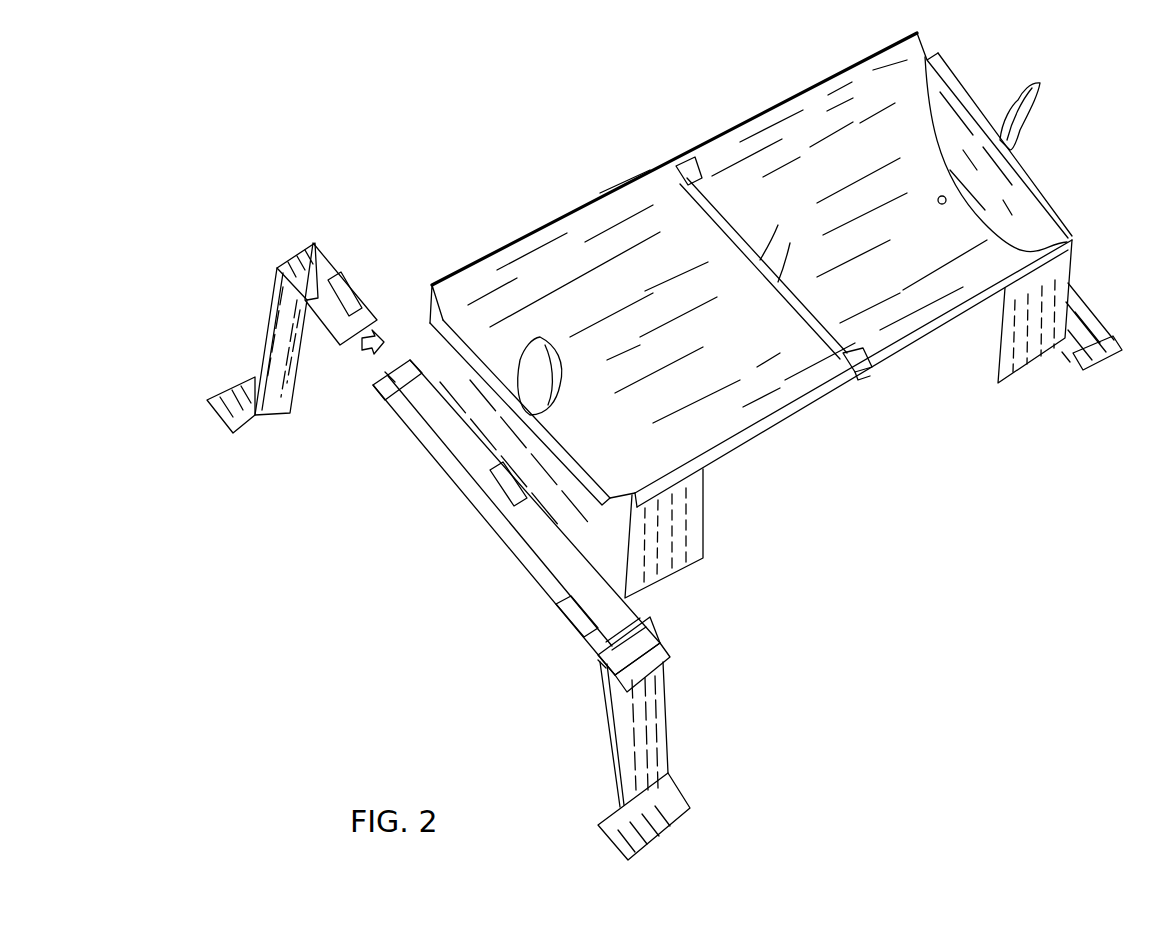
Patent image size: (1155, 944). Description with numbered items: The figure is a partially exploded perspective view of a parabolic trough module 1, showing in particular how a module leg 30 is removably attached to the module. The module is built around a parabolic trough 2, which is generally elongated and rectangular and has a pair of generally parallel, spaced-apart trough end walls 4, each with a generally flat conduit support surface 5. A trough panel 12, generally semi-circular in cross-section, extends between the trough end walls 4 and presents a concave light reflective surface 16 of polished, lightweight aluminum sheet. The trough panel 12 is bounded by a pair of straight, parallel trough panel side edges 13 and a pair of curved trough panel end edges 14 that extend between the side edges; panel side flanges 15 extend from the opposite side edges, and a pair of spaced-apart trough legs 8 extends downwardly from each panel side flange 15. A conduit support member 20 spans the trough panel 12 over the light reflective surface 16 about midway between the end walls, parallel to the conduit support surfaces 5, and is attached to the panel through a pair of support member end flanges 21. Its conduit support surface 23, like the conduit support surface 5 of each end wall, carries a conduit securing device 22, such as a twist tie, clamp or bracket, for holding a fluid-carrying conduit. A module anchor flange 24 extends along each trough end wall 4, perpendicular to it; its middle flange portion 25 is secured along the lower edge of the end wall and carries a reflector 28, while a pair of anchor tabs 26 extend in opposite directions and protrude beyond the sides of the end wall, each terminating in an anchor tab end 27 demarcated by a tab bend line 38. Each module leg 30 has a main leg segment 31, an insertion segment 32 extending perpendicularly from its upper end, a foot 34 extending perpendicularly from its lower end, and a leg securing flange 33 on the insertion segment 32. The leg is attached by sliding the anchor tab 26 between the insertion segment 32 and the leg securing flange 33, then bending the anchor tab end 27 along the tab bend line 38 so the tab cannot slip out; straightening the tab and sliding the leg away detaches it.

The parabolic trough module 1 is at (274, 168).
The parabolic trough 2 is at (770, 321).
The trough end wall 4 is at (570, 522).
The conduit support surface 5 is at (468, 358).
The trough leg 8 is at (688, 552).
The trough panel 12 is at (942, 122).
The trough panel side edge 13 is at (748, 115).
The trough panel end edge 14 is at (987, 220).
The panel side flange 15 is at (668, 487).
The light reflective surface 16 is at (820, 137).
The conduit support member 20 is at (733, 248).
The support member end flange 21 is at (688, 168).
The conduit securing device 22 is at (563, 350).
The conduit support surface 23 is at (724, 220).
The module anchor flange 24 is at (434, 486).
The middle flange portion 25 is at (560, 515).
The anchor tab 26 is at (410, 403).
The anchor tab end 27 is at (400, 385).
The reflector 28 is at (513, 482).
The module leg 30 is at (262, 320).
The main leg segment 31 is at (290, 337).
The insertion segment 32 is at (368, 305).
The leg securing flange 33 is at (337, 280).
The foot 34 is at (228, 396).
The tab bend line 38 is at (390, 372).